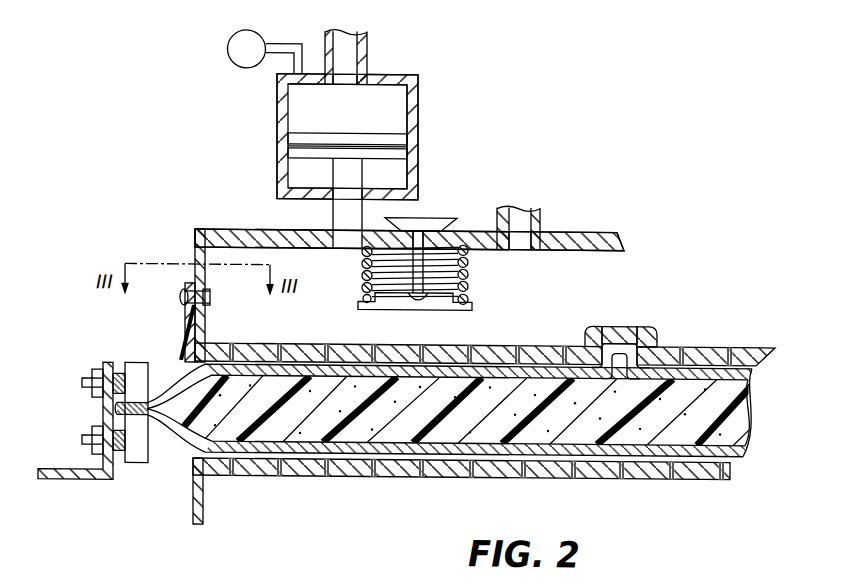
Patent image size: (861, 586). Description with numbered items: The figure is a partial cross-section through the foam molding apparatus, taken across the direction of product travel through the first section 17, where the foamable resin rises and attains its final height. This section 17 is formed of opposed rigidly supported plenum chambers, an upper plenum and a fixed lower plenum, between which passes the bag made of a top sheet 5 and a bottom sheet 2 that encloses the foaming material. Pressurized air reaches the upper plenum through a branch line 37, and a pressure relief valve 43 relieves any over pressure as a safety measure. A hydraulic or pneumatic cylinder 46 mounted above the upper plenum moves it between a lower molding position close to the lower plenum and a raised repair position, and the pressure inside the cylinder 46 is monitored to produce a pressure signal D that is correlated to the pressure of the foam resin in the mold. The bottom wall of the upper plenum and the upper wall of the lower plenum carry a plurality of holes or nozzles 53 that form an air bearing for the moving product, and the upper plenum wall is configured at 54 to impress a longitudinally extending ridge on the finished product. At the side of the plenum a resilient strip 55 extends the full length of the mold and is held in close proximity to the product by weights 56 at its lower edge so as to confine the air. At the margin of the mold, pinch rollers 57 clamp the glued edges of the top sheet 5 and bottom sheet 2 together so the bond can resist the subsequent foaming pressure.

The bottom sheet 2 is at (497, 448).
The top sheet 5 is at (533, 366).
The first section 17 is at (614, 231).
The branch line 37 is at (540, 222).
The pressure relief valve 43 is at (470, 283).
The hydraulic or pneumatic cylinder 46 is at (418, 116).
The holes or nozzles 53 is at (228, 344).
The configured plenum wall 54 is at (656, 323).
The resilient strip 55 is at (190, 319).
The weights 56 is at (168, 352).
The pinch rollers 57 is at (128, 363).
The pressure signal D is at (240, 66).